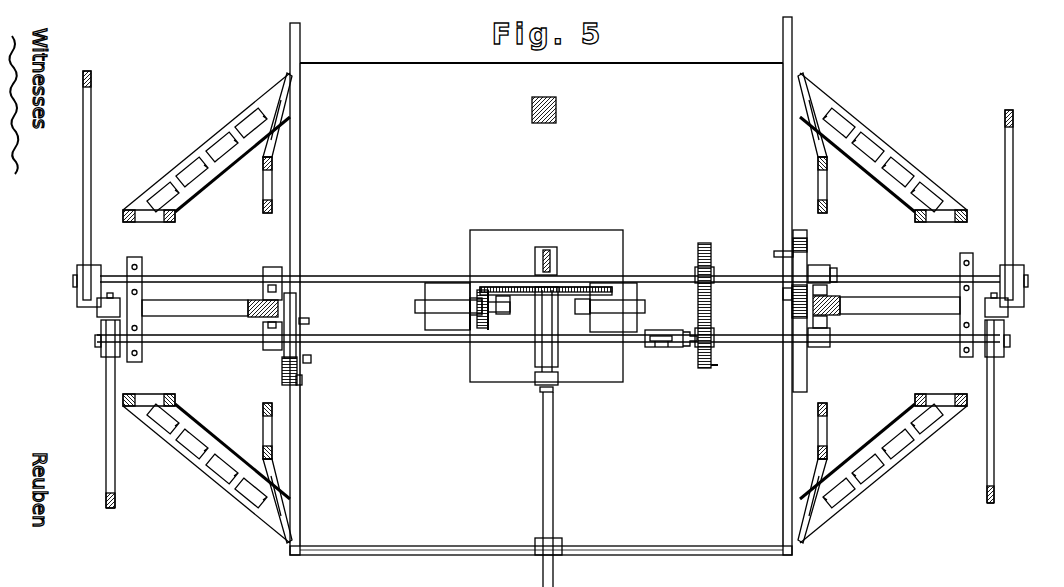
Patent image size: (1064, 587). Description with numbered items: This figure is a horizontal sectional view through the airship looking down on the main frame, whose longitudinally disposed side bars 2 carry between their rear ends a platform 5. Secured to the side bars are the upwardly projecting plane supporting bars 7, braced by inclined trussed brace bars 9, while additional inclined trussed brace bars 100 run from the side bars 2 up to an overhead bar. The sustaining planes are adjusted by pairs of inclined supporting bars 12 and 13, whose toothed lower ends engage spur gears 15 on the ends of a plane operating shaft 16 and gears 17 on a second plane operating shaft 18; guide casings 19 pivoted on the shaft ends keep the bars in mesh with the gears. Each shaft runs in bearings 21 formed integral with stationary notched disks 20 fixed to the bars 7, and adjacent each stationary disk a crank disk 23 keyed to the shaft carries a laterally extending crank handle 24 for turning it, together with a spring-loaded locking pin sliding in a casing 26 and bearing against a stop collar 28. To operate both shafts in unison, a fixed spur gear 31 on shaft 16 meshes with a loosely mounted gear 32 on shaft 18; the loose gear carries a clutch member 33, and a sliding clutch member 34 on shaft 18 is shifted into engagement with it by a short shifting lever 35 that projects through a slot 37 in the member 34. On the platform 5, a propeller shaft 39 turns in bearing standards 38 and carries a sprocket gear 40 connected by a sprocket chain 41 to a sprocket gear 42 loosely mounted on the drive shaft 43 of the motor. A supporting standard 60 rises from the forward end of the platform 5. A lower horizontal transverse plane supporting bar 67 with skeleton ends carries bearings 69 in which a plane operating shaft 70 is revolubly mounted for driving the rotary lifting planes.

The side bars 2 is at (300, 48).
The platform 5 is at (541, 304).
The plane supporting bars 7 is at (250, 298).
The inclined trussed brace bars 9 is at (263, 191).
The inclined supporting bars 12 is at (92, 135).
The inclined supporting bars 13 is at (116, 462).
The spur gears 15 is at (80, 264).
The plane operating shaft 16 is at (164, 276).
The gears 17 is at (104, 350).
The plane operating shaft 18 is at (173, 344).
The guide casings 19 is at (105, 307).
The stationary disks 20 is at (283, 370).
The bearings 21 is at (272, 266).
The crank disks 23 is at (293, 302).
The crank handles 24 is at (310, 321).
The casings 26 is at (298, 378).
The stop collars 28 is at (312, 360).
The fixed spur gear 31 is at (705, 245).
The loosely mounted gear 32 is at (712, 368).
The clutch member 33 is at (690, 348).
The clutch member 34 is at (677, 331).
The shifting lever 35 is at (655, 348).
The slot 37 is at (668, 348).
The bearing standards 38 is at (540, 386).
The propeller shaft 39 is at (555, 512).
The sprocket gear 40 is at (572, 283).
The sprocket chain 41 is at (602, 285).
The sprocket gear 42 is at (483, 330).
The drive shaft 43 is at (470, 315).
The supporting standard 60 is at (546, 126).
The plane supporting bar 67 is at (441, 296).
The bearings 69 is at (522, 314).
The plane operating shaft 70 is at (414, 299).
The inclined trussed brace bars 100 is at (191, 157).